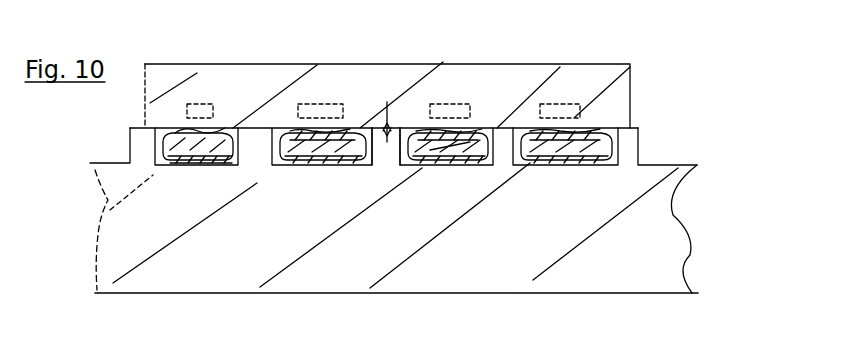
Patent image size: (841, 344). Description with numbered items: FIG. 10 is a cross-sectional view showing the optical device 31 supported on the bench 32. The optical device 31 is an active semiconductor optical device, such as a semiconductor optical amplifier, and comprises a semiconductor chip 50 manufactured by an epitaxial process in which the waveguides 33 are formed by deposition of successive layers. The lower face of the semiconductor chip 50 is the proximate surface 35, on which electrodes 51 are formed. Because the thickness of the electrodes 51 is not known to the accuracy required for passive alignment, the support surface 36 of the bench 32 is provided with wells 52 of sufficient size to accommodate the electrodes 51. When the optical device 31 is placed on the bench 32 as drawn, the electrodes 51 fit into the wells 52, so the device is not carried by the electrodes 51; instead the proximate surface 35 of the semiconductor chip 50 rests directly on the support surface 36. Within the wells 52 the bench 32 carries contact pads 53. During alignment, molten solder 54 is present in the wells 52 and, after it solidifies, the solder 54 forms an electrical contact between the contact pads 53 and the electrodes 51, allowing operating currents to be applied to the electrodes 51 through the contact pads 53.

The optical device 31 is at (435, 75).
The bench 32 is at (490, 272).
The waveguides 33 is at (197, 103).
The proximate surface 35 is at (390, 111).
The support surface 36 is at (387, 140).
The semiconductor chip 50 is at (597, 77).
The electrodes 51 is at (478, 135).
The wells 52 is at (492, 160).
The contact pads 53 is at (438, 160).
The solder 54 is at (471, 150).